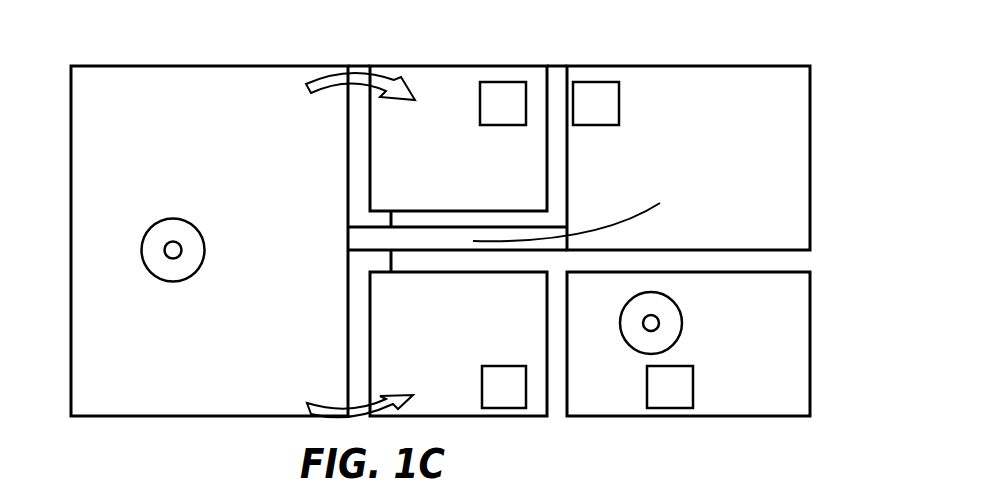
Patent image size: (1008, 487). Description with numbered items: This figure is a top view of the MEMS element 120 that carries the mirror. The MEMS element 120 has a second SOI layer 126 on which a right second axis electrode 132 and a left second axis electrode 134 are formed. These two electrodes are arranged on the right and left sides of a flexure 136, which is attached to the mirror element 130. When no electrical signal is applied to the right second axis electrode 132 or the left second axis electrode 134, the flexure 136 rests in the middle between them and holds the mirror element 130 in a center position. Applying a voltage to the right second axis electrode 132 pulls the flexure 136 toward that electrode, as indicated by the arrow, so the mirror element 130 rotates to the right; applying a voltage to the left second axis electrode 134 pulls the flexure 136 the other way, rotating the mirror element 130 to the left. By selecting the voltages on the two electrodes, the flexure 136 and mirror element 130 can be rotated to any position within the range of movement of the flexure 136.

The MEMS element 120 is at (730, 32).
The mirror element 130 is at (228, 66).
The right second axis electrode 132 is at (450, 65).
The left second axis electrode 134 is at (460, 417).
The flexure 136 is at (812, 155).
The second SOI layer 126 is at (795, 263).